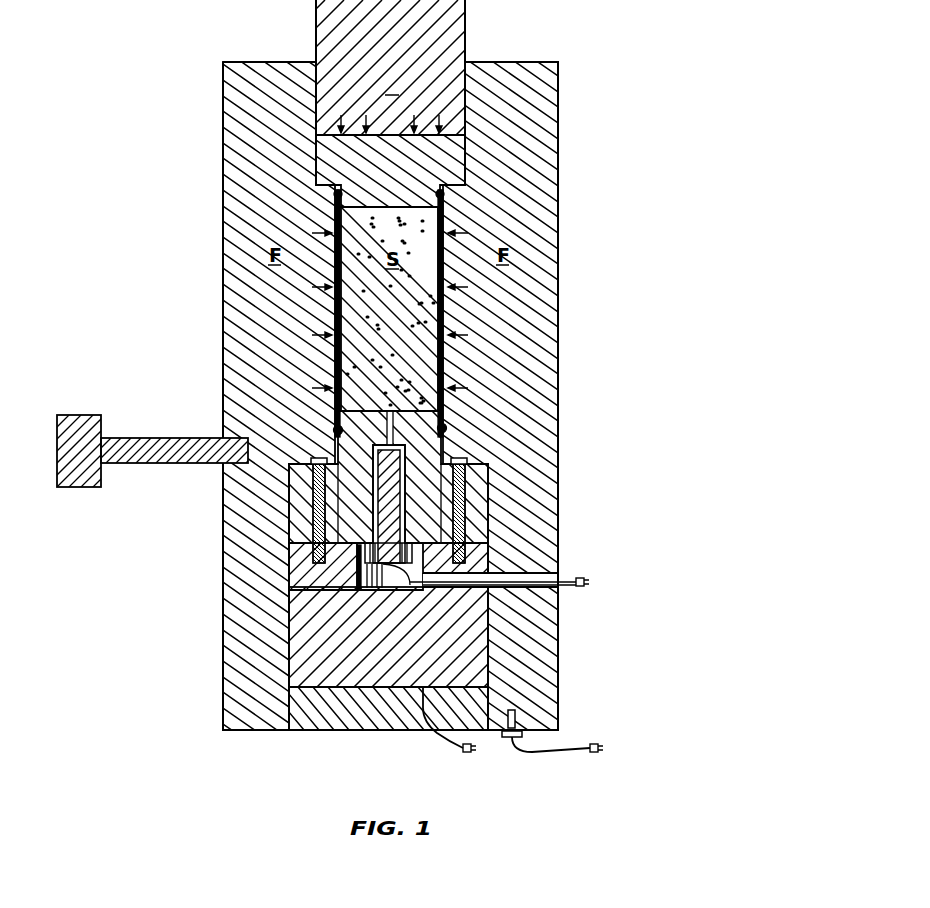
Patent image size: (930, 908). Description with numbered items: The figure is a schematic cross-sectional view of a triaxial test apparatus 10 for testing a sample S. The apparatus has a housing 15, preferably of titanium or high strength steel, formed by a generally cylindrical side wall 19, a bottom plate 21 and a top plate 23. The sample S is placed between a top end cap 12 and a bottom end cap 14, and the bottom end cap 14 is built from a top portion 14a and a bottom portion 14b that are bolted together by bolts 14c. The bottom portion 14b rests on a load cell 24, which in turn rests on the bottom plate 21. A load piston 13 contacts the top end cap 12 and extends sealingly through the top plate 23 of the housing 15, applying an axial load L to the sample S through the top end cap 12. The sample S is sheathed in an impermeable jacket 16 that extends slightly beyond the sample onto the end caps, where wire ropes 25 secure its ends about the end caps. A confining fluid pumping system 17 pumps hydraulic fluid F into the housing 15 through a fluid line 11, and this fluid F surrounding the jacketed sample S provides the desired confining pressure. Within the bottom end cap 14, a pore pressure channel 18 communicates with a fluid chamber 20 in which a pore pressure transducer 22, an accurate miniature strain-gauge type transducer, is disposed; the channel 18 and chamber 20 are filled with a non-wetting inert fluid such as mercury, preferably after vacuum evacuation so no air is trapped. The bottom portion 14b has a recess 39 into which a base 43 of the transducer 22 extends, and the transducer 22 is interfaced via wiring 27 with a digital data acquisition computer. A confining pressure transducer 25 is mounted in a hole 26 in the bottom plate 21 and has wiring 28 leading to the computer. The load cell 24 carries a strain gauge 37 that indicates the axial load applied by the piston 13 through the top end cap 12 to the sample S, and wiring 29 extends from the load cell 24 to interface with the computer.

The triaxial test apparatus 10 is at (570, 101).
The fluid line 11 is at (148, 438).
The top end cap 12 is at (313, 153).
The load piston 13 is at (313, 38).
The bottom end cap 14 is at (290, 516).
The top portion 14a is at (300, 545).
The bottom portion 14b is at (486, 650).
The bolts 14c is at (312, 492).
The housing 15 is at (223, 230).
The impermeable jacket 16 is at (333, 306).
The confining fluid pumping system 17 is at (82, 415).
The pore pressure channel 18 is at (336, 426).
The side wall 19 is at (560, 310).
The fluid chamber 20 is at (392, 447).
The bottom plate 21 is at (253, 731).
The pore pressure transducer 22 is at (408, 463).
The top plate 23 is at (510, 62).
The load cell 24 is at (346, 731).
The wire ropes / confining pressure transducer 25 is at (333, 197).
The hole 26 is at (518, 731).
The wiring 27 is at (568, 582).
The wiring 28 is at (520, 752).
The wiring 29 is at (440, 750).
The strain gauge 37 is at (420, 735).
The recess 39 is at (365, 560).
The base 43 is at (360, 580).